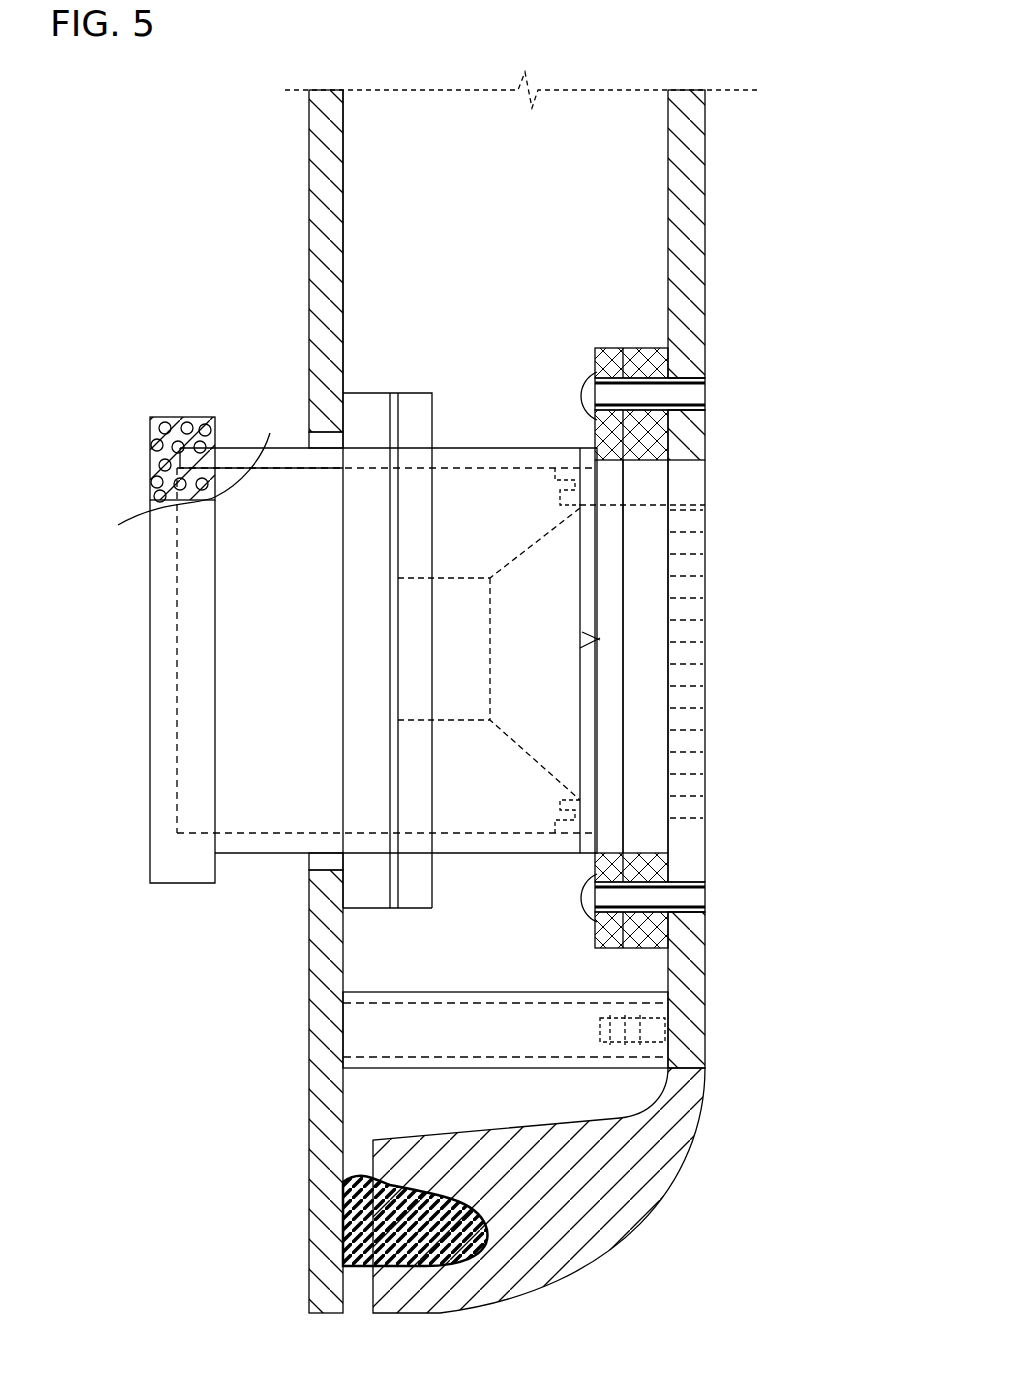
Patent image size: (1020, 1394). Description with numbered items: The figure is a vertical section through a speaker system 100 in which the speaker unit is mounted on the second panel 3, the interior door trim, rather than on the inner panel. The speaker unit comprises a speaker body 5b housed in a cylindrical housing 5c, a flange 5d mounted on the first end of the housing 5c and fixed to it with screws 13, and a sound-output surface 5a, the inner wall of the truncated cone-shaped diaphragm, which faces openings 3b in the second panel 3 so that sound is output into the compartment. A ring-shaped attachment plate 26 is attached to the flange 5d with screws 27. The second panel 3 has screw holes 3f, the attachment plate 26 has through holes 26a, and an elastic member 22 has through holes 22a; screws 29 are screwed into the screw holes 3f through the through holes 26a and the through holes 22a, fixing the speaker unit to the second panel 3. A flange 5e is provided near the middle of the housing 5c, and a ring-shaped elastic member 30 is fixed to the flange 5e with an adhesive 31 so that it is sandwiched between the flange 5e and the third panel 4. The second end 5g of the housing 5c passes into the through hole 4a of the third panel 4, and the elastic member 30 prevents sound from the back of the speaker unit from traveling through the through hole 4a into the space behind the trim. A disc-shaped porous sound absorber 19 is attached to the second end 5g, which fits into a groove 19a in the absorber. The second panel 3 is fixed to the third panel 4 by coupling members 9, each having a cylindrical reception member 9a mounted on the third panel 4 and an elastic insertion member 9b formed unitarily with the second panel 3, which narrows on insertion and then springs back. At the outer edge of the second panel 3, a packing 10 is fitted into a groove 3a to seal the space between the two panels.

The speaker system 100 is at (820, 152).
The second panel 3 is at (705, 145).
The groove 3a is at (540, 1238).
The openings 3b is at (710, 560).
The screw holes 3f is at (705, 378).
The third panel 4 is at (310, 228).
The through hole 4a is at (310, 876).
The sound-output surface 5a is at (496, 745).
The speaker body 5b is at (462, 578).
The housing 5c is at (300, 610).
The flange 5d is at (585, 598).
The flange 5e is at (425, 905).
The second end 5g is at (245, 450).
The coupling members 9 is at (405, 993).
The reception member 9a is at (430, 1060).
The insertion member 9b is at (600, 1060).
The packing 10 is at (345, 1216).
The screws 13 is at (560, 498).
The sound absorber 19 is at (165, 730).
The groove 19a is at (207, 417).
The elastic member 22 is at (636, 637).
The through holes 22a is at (690, 432).
The attachment plate 26 is at (617, 695).
The through holes 26a is at (597, 372).
The screws 27 is at (600, 640).
The screws 29 is at (578, 392).
The elastic member 30 is at (362, 393).
The adhesive 31 is at (400, 393).